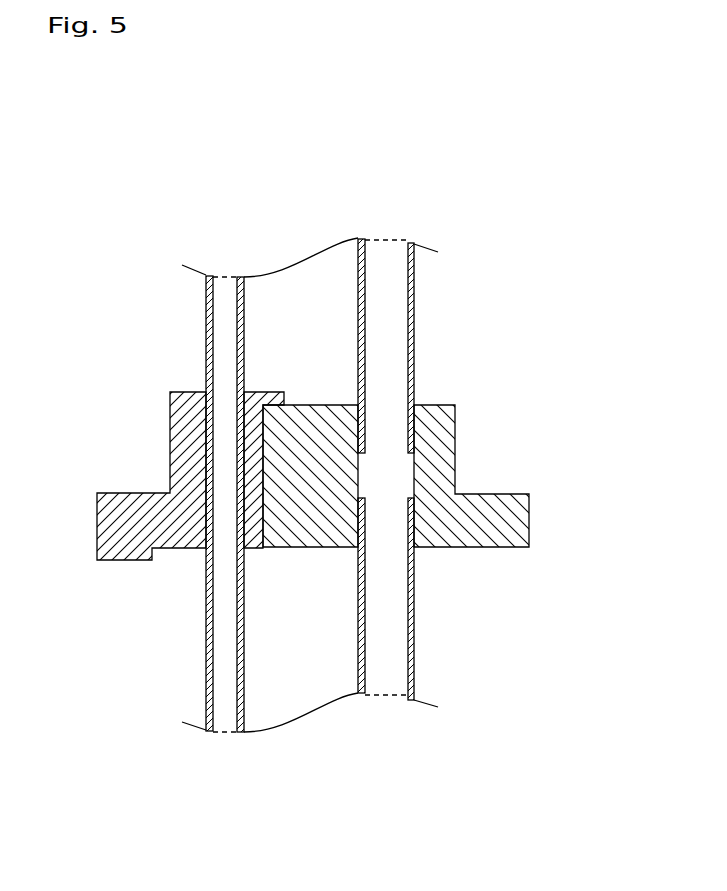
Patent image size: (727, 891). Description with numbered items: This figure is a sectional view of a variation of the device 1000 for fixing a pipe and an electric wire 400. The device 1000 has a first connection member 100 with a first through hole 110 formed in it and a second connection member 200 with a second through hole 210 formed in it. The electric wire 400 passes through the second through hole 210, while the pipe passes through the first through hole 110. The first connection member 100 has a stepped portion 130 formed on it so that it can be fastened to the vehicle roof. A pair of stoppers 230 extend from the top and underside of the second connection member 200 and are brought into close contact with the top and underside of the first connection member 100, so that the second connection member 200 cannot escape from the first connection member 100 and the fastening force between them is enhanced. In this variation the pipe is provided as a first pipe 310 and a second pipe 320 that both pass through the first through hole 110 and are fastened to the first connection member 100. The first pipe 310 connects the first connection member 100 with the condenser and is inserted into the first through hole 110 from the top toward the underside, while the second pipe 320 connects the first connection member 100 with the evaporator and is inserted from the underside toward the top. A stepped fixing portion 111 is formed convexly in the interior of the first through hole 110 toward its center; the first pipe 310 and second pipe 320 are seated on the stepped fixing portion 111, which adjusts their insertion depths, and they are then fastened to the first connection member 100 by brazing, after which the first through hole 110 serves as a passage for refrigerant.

The device for fixing a pipe and an electric wire 1000 is at (489, 193).
The first connection member 100 is at (422, 504).
The first through hole 110 is at (392, 407).
The stepped fixing portion 111 is at (414, 478).
The stepped portion 130 is at (493, 494).
The second connection member 200 is at (180, 506).
The second through hole 210 is at (221, 435).
The stoppers 230 is at (274, 392).
The first pipe 310 is at (414, 311).
The second pipe 320 is at (414, 655).
The electric wire 400 is at (206, 327).